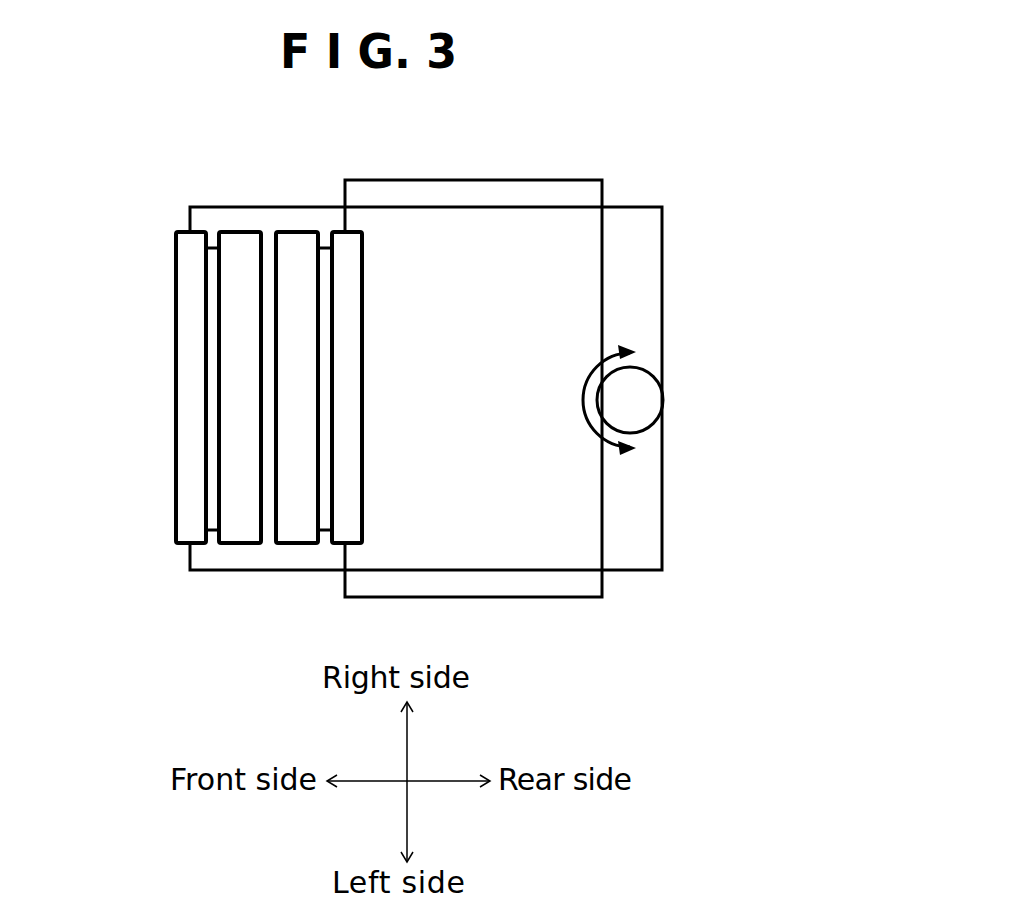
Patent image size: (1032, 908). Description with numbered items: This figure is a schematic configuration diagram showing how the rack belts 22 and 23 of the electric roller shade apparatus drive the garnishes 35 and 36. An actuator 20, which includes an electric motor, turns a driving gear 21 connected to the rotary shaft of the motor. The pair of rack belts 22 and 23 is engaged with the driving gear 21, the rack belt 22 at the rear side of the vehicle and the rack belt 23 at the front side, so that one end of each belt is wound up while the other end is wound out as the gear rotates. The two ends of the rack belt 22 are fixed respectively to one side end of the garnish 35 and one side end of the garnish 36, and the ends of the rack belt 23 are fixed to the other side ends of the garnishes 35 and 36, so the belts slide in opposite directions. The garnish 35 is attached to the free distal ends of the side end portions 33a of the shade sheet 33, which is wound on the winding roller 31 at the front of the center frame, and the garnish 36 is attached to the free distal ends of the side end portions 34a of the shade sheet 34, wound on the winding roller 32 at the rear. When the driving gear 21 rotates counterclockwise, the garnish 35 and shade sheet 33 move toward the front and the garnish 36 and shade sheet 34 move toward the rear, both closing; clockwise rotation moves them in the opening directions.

The actuator 20 is at (694, 400).
The driving gear 21 is at (620, 410).
The rack belt 22 is at (662, 516).
The rack belt 23 is at (602, 548).
The winding roller 31 is at (240, 262).
The winding roller 32 is at (297, 262).
The shade sheet 33 is at (146, 385).
The side end portions 33a is at (214, 258).
The shade sheet 34 is at (389, 388).
The side end portions 34a is at (327, 262).
The garnish 35 is at (187, 395).
The garnish 36 is at (345, 410).